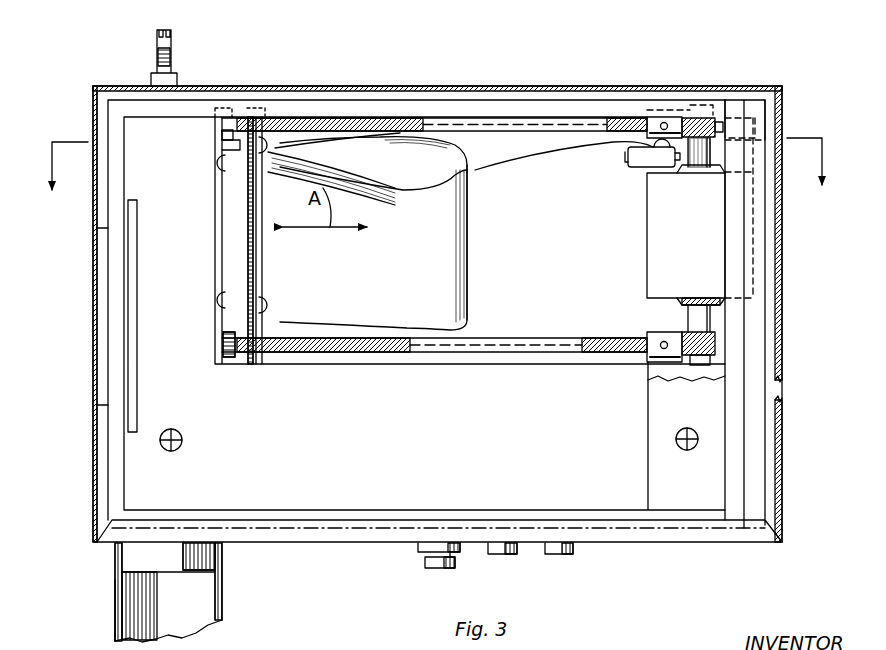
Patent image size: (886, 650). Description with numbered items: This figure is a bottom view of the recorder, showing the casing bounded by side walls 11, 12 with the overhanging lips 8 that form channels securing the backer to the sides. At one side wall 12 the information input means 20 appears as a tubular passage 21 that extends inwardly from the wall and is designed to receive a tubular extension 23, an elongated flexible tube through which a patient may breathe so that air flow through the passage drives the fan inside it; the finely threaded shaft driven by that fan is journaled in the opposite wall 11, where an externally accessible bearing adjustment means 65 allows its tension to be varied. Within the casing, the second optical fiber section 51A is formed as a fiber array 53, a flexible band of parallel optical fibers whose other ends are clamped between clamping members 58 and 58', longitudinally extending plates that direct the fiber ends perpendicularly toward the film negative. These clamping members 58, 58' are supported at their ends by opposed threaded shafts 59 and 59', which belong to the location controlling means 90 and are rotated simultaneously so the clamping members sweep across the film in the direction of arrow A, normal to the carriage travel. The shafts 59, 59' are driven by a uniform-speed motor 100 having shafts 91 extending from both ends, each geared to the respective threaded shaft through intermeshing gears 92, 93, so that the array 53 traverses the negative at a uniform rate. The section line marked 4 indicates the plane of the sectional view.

The section line 4- 4 is at (437, 177).
The overhanging lips 8 is at (672, 527).
The side wall 11 is at (412, 97).
The side wall 12 is at (383, 543).
The information input means 20 is at (106, 550).
The tubular passage 21 is at (222, 556).
The tubular extension 23 is at (115, 603).
The second optical fiber section 51A is at (472, 204).
The fiber array 53 is at (435, 263).
The clamping member 58 is at (288, 240).
The clamping member 58' is at (280, 236).
The threaded shaft 59 is at (434, 92).
The threaded shaft 59' is at (434, 316).
The bearing adjustment means 65 is at (172, 52).
The location controlling means 90 is at (722, 110).
The motor shafts 91 is at (700, 315).
The intermeshing gear 92 is at (697, 117).
The intermeshing gear 93 is at (693, 352).
The motor 100 is at (663, 202).